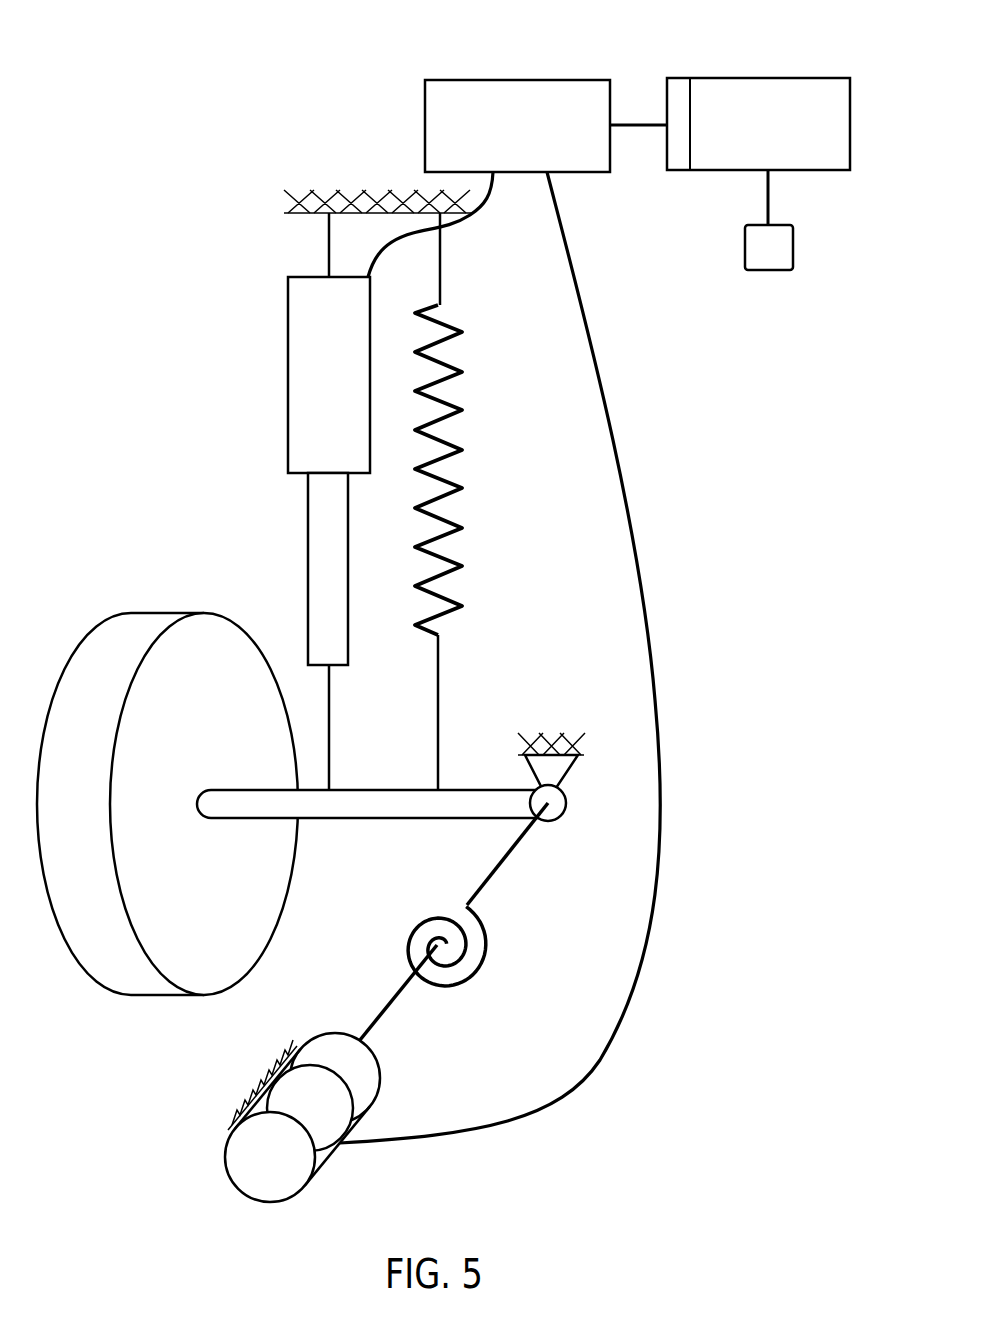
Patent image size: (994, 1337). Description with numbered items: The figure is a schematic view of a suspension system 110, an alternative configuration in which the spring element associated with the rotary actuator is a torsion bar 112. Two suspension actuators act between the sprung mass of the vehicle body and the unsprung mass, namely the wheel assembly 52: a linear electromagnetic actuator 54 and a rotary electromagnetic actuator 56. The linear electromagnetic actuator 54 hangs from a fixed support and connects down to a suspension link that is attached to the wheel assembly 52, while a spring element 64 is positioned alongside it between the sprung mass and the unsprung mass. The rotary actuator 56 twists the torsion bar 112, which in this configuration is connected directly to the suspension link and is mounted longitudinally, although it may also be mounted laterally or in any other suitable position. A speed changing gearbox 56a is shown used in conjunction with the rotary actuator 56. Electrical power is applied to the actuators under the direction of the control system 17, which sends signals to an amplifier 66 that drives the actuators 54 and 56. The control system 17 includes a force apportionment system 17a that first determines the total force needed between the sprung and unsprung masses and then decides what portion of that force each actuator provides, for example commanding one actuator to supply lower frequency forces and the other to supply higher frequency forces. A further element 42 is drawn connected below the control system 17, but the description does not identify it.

The suspension system 110 is at (116, 172).
The amplifier 66 is at (511, 80).
The control system 17 is at (758, 78).
The force apportionment system 17a is at (679, 78).
The temperature sensor 42 is at (745, 248).
The linear electromagnetic actuator 54 is at (288, 375).
The spring element 64 is at (450, 456).
The wheel assembly 52 is at (96, 626).
The torsion bar 112 is at (487, 930).
The speed changing gearbox 56a is at (377, 1061).
The rotary electromagnetic actuator 56 is at (348, 1113).